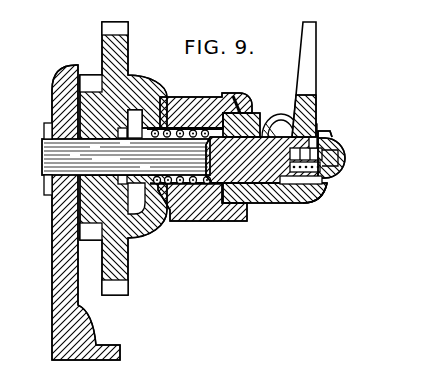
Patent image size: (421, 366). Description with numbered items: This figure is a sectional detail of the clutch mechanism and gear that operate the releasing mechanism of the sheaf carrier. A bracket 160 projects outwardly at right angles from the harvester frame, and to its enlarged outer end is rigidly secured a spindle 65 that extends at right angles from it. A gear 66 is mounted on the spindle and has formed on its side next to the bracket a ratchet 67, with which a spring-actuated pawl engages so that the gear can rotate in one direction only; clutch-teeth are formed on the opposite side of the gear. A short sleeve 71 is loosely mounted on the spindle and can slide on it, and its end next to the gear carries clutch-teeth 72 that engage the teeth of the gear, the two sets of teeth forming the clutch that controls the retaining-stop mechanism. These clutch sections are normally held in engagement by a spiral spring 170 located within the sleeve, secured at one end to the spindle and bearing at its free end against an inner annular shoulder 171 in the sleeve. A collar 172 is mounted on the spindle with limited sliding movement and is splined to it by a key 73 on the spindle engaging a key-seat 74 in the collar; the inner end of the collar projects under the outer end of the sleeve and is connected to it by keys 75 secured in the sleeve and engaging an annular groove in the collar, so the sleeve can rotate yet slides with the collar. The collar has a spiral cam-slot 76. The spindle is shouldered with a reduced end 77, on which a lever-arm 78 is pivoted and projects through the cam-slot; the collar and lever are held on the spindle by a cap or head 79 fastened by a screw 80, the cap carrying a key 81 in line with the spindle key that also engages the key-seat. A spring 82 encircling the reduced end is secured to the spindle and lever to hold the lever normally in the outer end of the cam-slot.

The spindle 65 is at (126, 159).
The gear 66 is at (128, 254).
The ratchet 67 is at (90, 236).
The sleeve 71 is at (203, 118).
The clutch-teeth 72 is at (183, 192).
The key 73 is at (259, 196).
The key-seat 74 is at (318, 196).
The keys 75 is at (239, 110).
The spiral cam-slot 76 is at (272, 133).
The reduced end 77 is at (316, 132).
The lever-arm 78 is at (316, 52).
The cap or head 79 is at (338, 147).
The screw 80 is at (341, 162).
The key 81 is at (325, 183).
The spring 82 is at (329, 135).
The bracket 160 is at (52, 267).
The spiral spring 170 is at (197, 130).
The inner annular shoulder 171 is at (160, 187).
The collar 172 is at (282, 194).